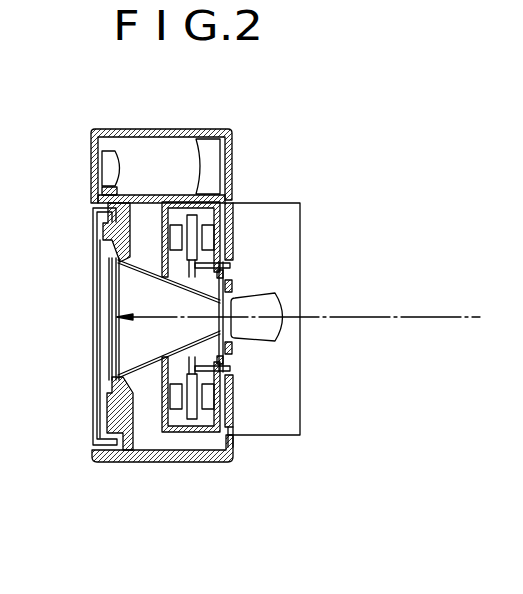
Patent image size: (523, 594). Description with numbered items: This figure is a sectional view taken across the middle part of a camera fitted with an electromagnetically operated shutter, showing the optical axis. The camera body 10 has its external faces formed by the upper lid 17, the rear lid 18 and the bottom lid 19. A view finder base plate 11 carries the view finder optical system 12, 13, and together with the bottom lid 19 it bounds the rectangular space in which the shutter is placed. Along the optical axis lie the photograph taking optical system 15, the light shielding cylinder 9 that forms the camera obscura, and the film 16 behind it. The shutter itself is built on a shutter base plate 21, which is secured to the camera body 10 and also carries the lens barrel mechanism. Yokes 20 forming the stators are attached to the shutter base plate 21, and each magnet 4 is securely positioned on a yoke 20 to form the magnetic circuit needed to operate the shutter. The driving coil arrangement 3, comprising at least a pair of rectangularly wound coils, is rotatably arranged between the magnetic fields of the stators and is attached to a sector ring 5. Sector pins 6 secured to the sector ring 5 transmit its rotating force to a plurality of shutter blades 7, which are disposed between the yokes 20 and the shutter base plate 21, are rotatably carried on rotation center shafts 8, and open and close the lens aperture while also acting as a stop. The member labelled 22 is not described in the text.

The driving coil arrangement 3 is at (180, 435).
The magnet 4 is at (178, 398).
The sector ring 5 is at (197, 433).
The sector pin 6 is at (231, 370).
The shutter blade 7 is at (233, 390).
The rotation center shaft 8 is at (228, 360).
The light shielding cylinder 9 is at (151, 363).
The camera body 10 is at (115, 452).
The view finder base plate 11 is at (154, 194).
The view finder optical system 12 is at (213, 157).
The view finder optical system 13 is at (112, 160).
The photograph taking optical system 15 is at (262, 305).
The film 16 is at (110, 327).
The upper lid 17 is at (197, 130).
The rear lid 18 is at (95, 312).
The bottom lid 19 is at (141, 463).
The yoke 20 is at (236, 447).
The shutter base plate 21 is at (234, 228).
The cone rim 22 is at (115, 272).